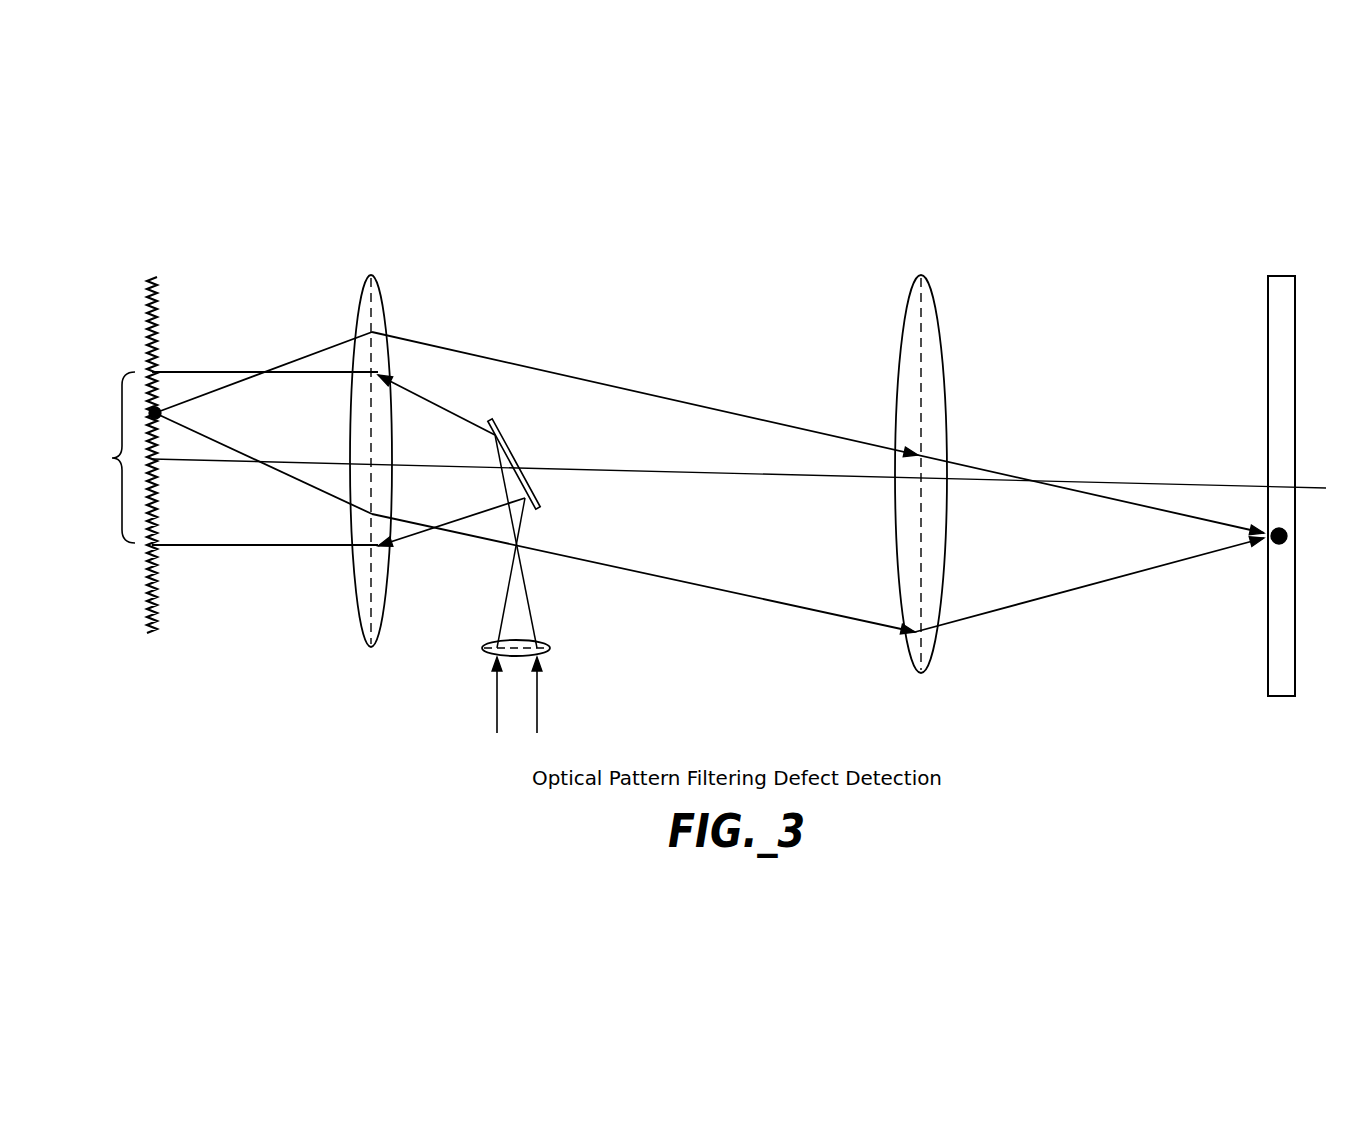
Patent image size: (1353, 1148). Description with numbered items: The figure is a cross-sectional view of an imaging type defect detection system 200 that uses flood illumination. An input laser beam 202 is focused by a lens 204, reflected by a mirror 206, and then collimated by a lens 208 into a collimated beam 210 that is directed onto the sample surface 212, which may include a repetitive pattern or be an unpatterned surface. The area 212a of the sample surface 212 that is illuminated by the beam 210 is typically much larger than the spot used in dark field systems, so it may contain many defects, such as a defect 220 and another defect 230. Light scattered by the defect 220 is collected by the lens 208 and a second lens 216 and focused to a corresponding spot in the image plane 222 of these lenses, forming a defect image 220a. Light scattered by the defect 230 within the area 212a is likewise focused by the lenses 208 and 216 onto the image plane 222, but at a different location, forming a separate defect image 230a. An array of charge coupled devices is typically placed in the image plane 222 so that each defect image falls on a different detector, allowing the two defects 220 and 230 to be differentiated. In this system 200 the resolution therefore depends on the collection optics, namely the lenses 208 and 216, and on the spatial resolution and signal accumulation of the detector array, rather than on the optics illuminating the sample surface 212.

The imaging detection system 200 is at (905, 212).
The input laser beam 202 is at (538, 714).
The lens 204 is at (548, 650).
The mirror 206 is at (518, 455).
The lens 208 is at (385, 300).
The collimated beam 210 is at (265, 527).
The sample surface 212 is at (160, 571).
The illuminated area 212a is at (88, 457).
The lens 216 is at (940, 333).
The defect 220 is at (157, 403).
The defect image 220a is at (1262, 522).
The image plane 222 is at (1268, 668).
The defect 230 is at (153, 500).
The defect image 230a is at (1268, 332).